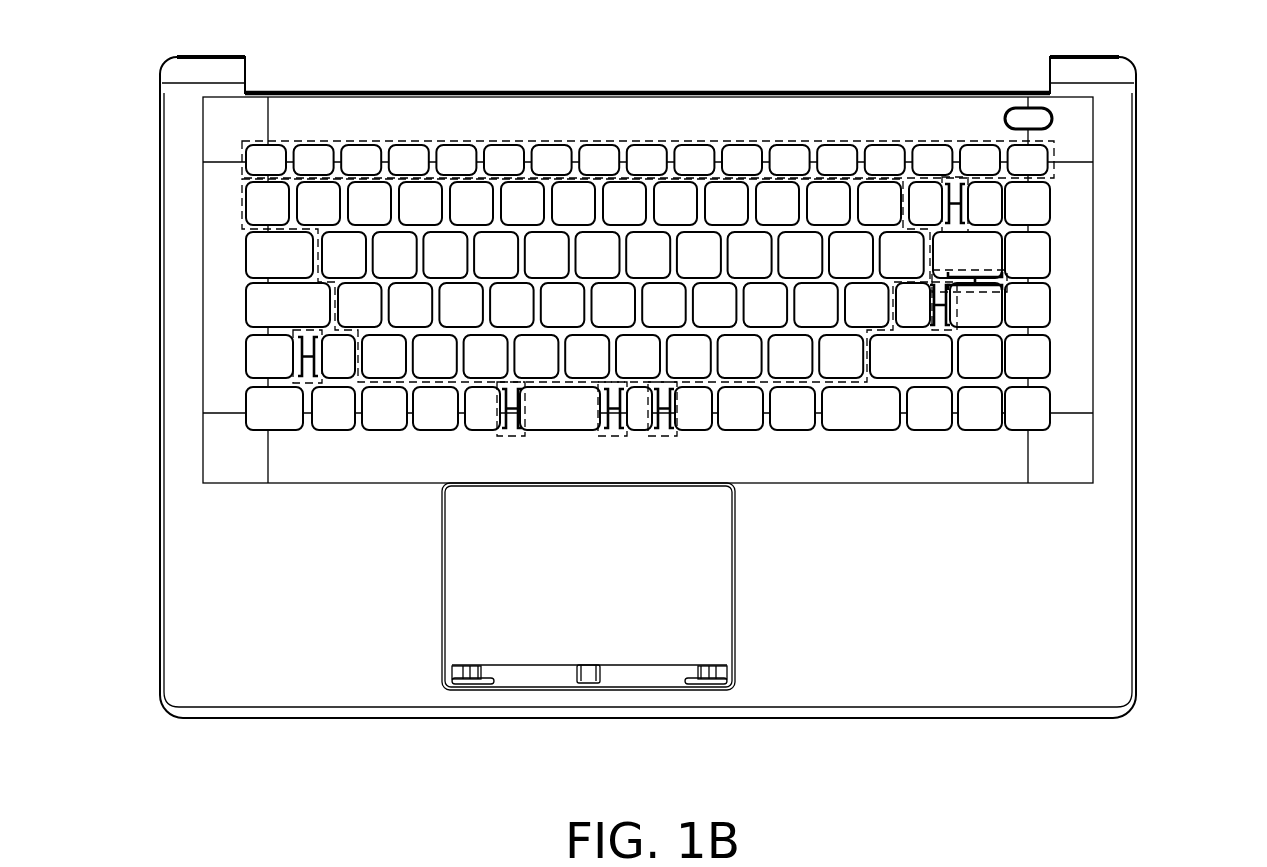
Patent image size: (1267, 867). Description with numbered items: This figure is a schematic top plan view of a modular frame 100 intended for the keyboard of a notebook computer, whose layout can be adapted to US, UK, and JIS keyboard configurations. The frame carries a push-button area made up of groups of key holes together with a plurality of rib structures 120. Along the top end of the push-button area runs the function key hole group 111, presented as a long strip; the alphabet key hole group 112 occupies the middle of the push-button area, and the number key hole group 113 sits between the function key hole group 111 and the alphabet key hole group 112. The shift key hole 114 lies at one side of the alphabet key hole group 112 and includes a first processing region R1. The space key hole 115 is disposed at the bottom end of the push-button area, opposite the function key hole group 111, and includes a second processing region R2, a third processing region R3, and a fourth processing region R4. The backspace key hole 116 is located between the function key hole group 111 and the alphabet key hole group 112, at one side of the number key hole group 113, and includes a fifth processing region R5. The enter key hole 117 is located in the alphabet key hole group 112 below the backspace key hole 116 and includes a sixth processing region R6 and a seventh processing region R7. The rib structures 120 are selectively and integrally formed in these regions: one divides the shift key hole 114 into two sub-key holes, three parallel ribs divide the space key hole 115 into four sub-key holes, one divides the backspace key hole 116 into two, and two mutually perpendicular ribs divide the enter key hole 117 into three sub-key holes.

The modular frame 100 is at (1258, 792).
The function key hole group 111 is at (652, 141).
The alphabet key hole group 112 is at (332, 308).
The number key hole group 113 is at (240, 203).
The shift key hole 114 is at (258, 357).
The space key hole 115 is at (693, 413).
The backspace key hole 116 is at (991, 221).
The enter key hole 117 is at (986, 320).
The rib structure 120 is at (290, 331).
The first processing region R1 is at (293, 372).
The second processing region R2 is at (511, 437).
The third processing region R3 is at (613, 437).
The fourth processing region R4 is at (664, 437).
The fifth processing region R5 is at (968, 190).
The sixth processing region R6 is at (957, 300).
The seventh processing region R7 is at (1007, 281).